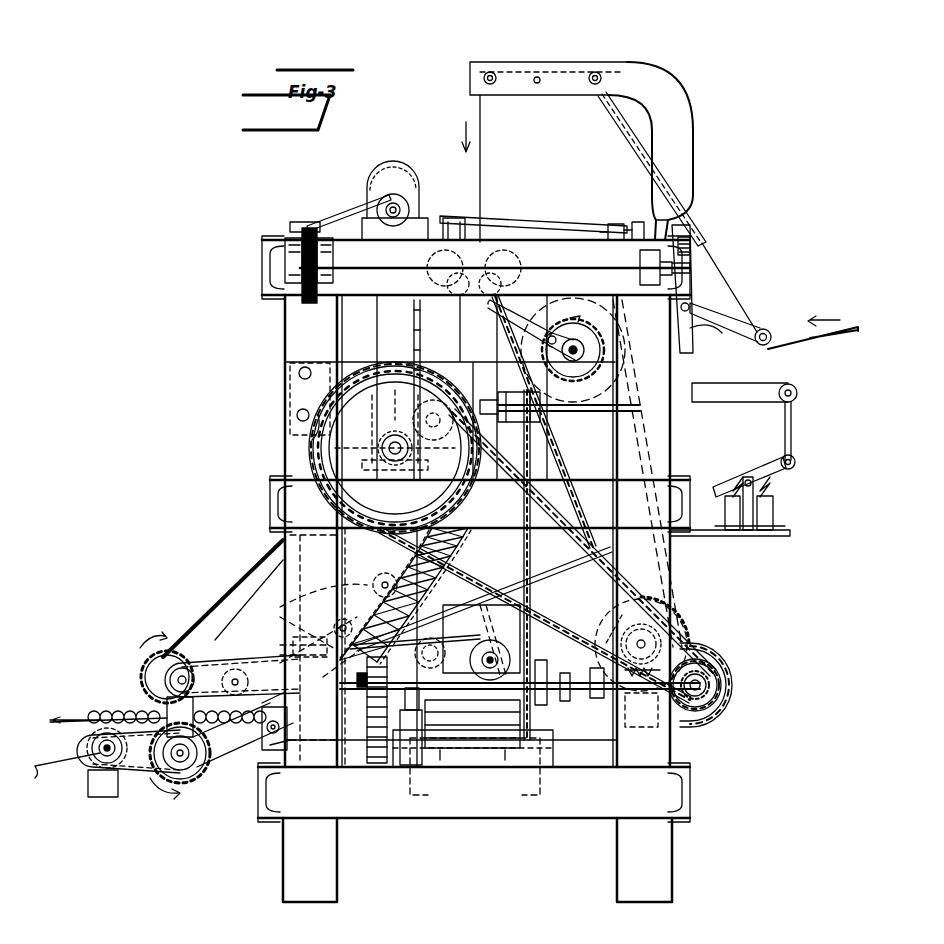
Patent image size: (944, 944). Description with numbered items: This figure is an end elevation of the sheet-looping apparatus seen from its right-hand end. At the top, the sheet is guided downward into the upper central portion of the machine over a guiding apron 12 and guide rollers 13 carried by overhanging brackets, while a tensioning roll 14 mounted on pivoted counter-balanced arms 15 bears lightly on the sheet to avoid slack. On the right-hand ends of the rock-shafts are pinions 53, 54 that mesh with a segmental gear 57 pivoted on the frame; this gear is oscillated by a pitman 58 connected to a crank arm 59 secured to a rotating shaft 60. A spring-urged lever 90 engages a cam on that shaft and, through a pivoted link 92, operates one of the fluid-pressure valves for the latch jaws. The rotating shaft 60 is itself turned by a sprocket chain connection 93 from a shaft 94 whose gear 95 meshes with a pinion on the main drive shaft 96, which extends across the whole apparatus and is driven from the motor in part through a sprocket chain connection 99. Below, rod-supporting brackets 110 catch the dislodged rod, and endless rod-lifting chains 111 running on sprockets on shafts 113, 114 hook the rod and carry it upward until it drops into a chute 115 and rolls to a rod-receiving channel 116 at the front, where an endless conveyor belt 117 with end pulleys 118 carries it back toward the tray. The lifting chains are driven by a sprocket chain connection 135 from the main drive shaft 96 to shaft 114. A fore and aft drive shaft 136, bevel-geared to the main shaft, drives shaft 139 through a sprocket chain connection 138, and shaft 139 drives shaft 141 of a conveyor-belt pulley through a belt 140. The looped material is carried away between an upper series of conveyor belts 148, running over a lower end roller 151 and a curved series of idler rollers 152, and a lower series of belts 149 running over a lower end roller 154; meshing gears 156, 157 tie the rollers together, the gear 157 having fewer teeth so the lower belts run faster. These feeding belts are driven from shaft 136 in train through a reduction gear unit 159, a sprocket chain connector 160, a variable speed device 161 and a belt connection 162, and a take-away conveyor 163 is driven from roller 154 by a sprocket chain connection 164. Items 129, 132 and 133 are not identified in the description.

The guiding apron 12 is at (612, 103).
The guide rollers 13 is at (492, 72).
The tensioning roll 14 is at (764, 332).
The counter-balanced arms 15 is at (731, 313).
The pinion 53 is at (454, 217).
The pinion 54 is at (505, 262).
The segmental gear 57 is at (414, 320).
The pitman 58 is at (532, 278).
The crank arm 59 is at (573, 354).
The rotating shaft 60 is at (582, 345).
The lever 90 is at (735, 393).
The pivoted link 92 is at (794, 422).
The sprocket chain connection 93 is at (563, 448).
The shaft 94 is at (693, 629).
The gear 95 is at (683, 612).
The main drive shaft 96 is at (720, 660).
The sprocket chain connection 99 is at (737, 703).
The rod-supporting brackets 110 is at (455, 428).
The rod-lifting chains 111 is at (377, 293).
The shaft 113 is at (412, 207).
The shaft 114 is at (392, 463).
The chute 115 is at (352, 215).
The rod-receiving channel 116 is at (300, 228).
The endless conveyor belt 117 is at (313, 229).
The end pulleys 118 is at (292, 265).
The bracket 129 is at (604, 222).
The guide 132 is at (673, 737).
The link 133 is at (684, 203).
The sprocket chain connection 135 is at (512, 519).
The fore and aft drive shaft 136 is at (615, 695).
The sprocket chain connection 138 is at (533, 557).
The shaft 139 is at (556, 428).
The belt 140 is at (748, 332).
The shaft 141 is at (558, 270).
The upper conveyor belts 148 is at (223, 602).
The lower conveyor belts 149 is at (212, 757).
The lower end roller 151 is at (207, 652).
The idler rollers 152 is at (292, 593).
The lower end roller 154 is at (202, 770).
The gear 156 is at (147, 682).
The gear 157 is at (192, 786).
The reduction gear unit 159 is at (463, 607).
The sprocket chain connector 160 is at (573, 737).
The variable speed device 161 is at (500, 723).
The belt connection 162 is at (380, 730).
The conveyor 163 is at (63, 767).
The sprocket chain connection 164 is at (135, 770).